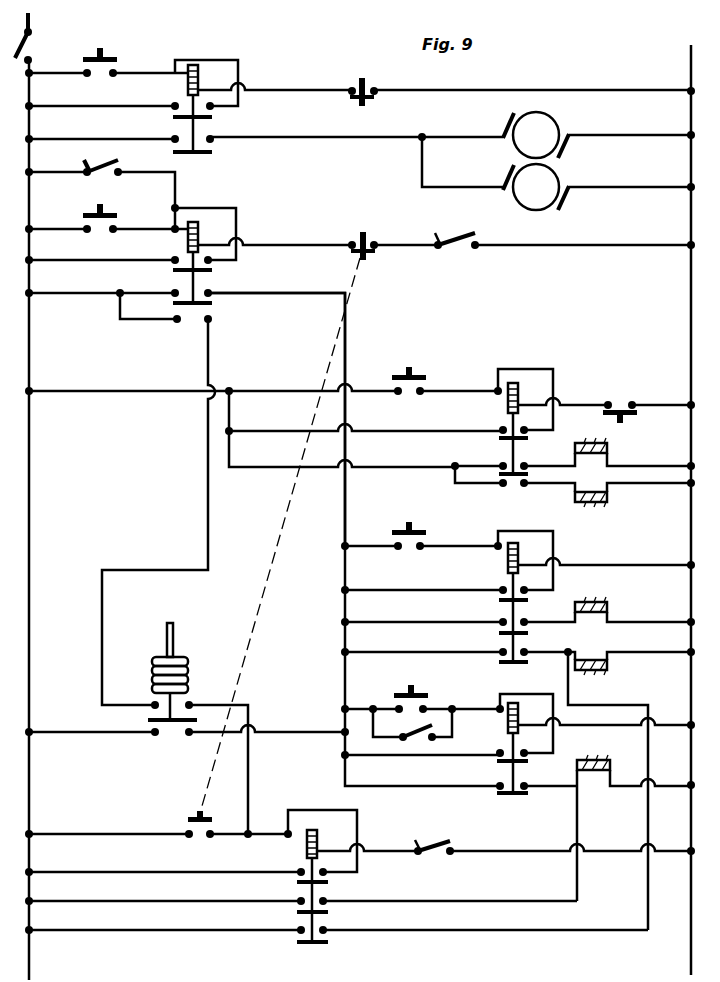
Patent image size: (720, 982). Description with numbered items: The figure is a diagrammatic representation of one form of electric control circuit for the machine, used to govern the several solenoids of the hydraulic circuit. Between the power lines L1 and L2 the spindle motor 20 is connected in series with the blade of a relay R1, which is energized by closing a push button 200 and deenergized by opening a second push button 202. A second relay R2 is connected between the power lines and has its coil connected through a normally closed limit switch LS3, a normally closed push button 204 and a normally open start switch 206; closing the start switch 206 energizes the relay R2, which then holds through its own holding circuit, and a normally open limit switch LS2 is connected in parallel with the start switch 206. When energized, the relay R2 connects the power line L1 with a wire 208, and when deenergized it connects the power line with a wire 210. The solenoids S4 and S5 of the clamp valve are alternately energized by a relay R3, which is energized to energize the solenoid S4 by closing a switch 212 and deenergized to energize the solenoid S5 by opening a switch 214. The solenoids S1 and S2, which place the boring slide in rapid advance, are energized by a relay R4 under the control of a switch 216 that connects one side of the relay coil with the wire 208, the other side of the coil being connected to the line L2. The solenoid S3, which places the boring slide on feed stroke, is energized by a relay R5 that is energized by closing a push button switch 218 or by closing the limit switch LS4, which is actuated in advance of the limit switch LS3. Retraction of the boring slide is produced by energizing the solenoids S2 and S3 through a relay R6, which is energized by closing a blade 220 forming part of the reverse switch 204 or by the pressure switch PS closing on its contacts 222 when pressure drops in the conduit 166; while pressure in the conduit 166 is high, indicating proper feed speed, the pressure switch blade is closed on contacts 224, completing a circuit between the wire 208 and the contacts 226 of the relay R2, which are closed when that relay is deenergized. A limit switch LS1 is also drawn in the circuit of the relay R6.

The power line L1 is at (36, 494).
The power line L2 is at (689, 493).
The push button 200 is at (110, 57).
The relay R1 is at (201, 78).
The second push button 202 is at (360, 83).
The spindle motor 20 is at (562, 128).
The limit switch LS2 is at (117, 164).
The start switch 206 is at (110, 211).
The second relay R2 is at (201, 232).
The push button 204 is at (360, 228).
The limit switch LS3 is at (460, 252).
The contacts of relay R-2 226 is at (176, 323).
The wire 208 is at (282, 296).
The wire 210 is at (208, 508).
The switch 212 is at (416, 374).
The relay R3 is at (524, 386).
The switch 214 is at (620, 402).
The solenoid S4 is at (611, 443).
The solenoid S5 is at (612, 502).
The switch 216 is at (418, 540).
The relay R4 is at (526, 554).
The solenoid S1 is at (612, 602).
The solenoid S2 is at (611, 672).
The push button switch 218 is at (400, 690).
The relay R5 is at (522, 708).
The limit switch LS4 is at (414, 744).
The solenoid S3 is at (596, 758).
The conduit 166 is at (174, 624).
The pressure switch PS is at (190, 686).
The contacts 222 is at (150, 700).
The contacts 224 is at (155, 740).
The blade 220 is at (186, 817).
The relay R6 is at (314, 832).
The limit switch LS1 is at (442, 846).